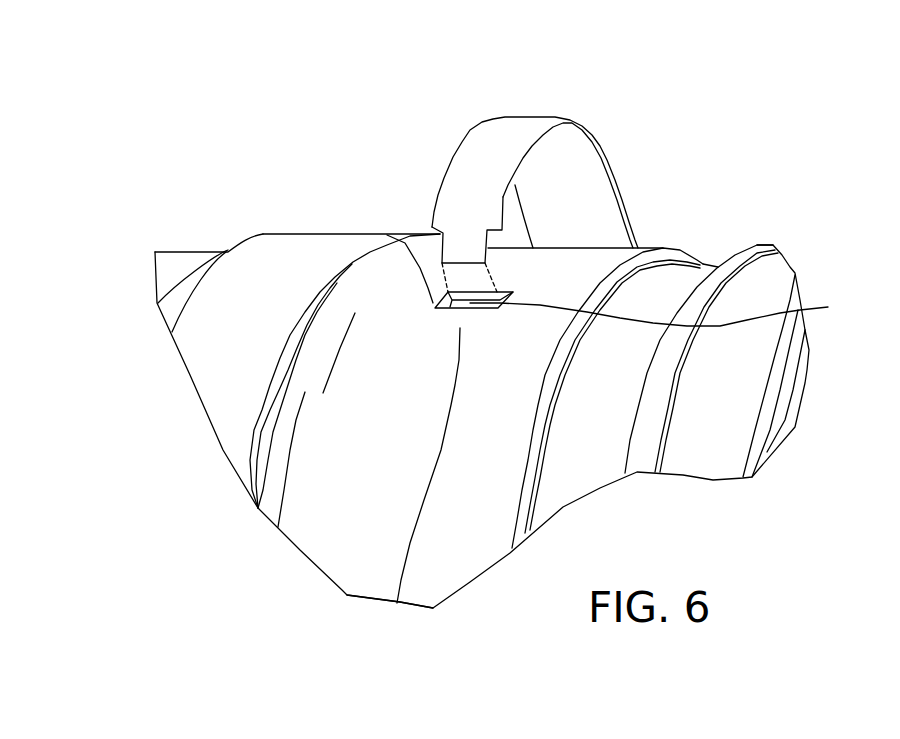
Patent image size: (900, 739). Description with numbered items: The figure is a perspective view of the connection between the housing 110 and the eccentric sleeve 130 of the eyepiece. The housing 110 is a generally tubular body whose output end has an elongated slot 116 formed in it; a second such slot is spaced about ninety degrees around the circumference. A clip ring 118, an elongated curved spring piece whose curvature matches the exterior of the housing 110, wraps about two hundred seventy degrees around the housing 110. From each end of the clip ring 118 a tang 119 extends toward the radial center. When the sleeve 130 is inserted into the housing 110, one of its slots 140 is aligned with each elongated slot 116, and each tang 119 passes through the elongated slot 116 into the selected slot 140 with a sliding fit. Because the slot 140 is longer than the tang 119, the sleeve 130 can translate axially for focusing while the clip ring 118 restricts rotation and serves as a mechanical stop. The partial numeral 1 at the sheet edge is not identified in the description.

The housing 110 is at (612, 258).
The elongated slot 116 is at (387, 235).
The clip ring 118 is at (500, 143).
The tang 119 is at (467, 255).
The eccentric sleeve 130 is at (397, 603).
The slot 140 is at (675, 306).
The partial numeral 1 is at (895, 210).